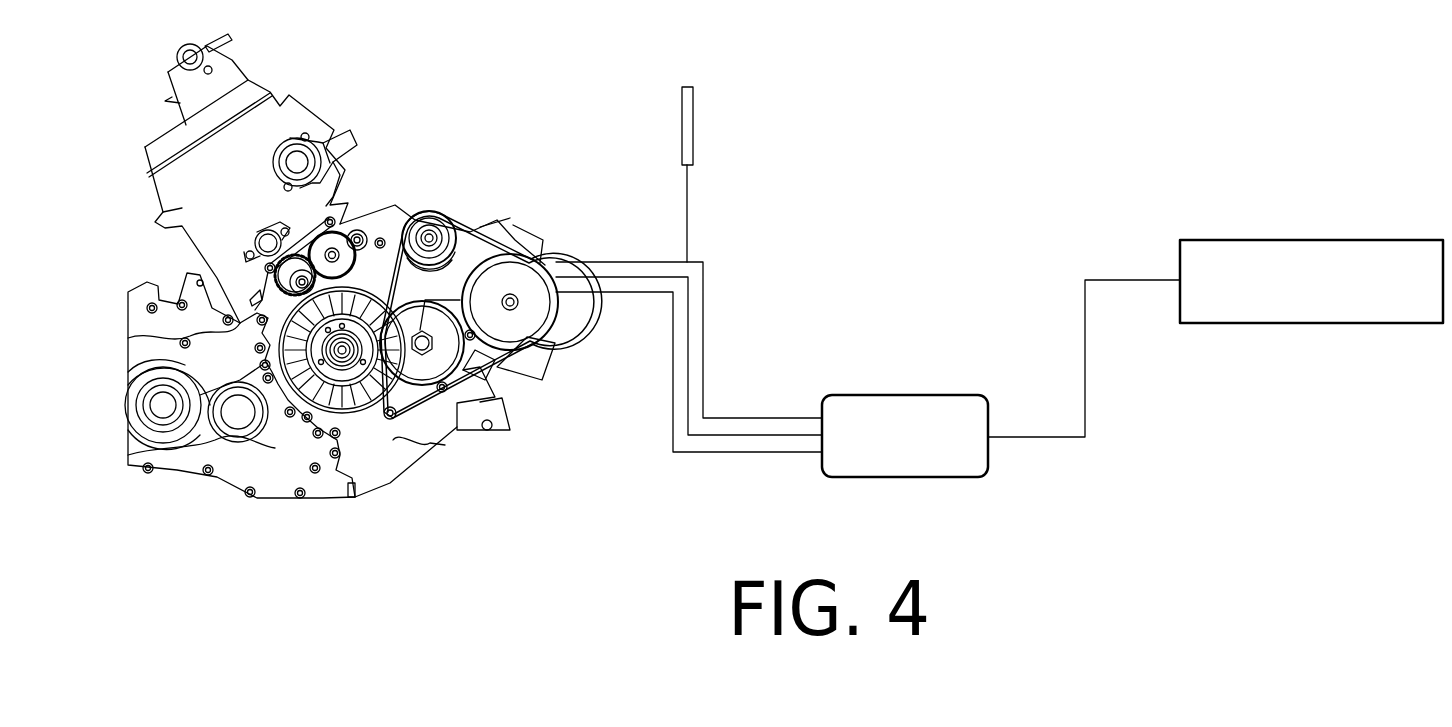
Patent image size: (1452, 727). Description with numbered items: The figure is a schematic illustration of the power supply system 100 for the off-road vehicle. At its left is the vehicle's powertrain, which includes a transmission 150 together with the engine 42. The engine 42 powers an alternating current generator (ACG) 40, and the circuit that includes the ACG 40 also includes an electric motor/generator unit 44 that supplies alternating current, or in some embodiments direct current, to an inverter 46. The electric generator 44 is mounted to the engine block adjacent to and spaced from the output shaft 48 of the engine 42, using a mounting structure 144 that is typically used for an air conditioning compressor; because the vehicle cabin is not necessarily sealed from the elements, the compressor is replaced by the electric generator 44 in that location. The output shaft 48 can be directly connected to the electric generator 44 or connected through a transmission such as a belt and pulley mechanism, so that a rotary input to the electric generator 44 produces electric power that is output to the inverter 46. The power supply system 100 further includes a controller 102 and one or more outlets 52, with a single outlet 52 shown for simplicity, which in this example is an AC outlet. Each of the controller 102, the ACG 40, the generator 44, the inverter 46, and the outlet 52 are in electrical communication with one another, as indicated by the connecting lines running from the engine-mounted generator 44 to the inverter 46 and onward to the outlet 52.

The transmission 150 is at (155, 259).
The alternating current generator (ACG) 40 is at (356, 422).
The engine 42 is at (367, 267).
The electric motor/generator unit 44 is at (530, 308).
The mounting structure 144 is at (527, 348).
The output shaft 48 is at (347, 352).
The power supply system 100 is at (496, 154).
The controller 102 is at (694, 125).
The inverter 46 is at (905, 395).
The outlet 52 is at (1303, 240).